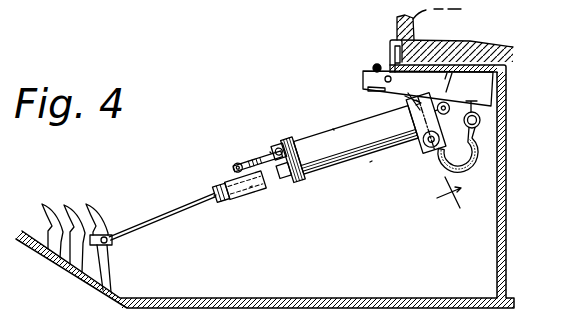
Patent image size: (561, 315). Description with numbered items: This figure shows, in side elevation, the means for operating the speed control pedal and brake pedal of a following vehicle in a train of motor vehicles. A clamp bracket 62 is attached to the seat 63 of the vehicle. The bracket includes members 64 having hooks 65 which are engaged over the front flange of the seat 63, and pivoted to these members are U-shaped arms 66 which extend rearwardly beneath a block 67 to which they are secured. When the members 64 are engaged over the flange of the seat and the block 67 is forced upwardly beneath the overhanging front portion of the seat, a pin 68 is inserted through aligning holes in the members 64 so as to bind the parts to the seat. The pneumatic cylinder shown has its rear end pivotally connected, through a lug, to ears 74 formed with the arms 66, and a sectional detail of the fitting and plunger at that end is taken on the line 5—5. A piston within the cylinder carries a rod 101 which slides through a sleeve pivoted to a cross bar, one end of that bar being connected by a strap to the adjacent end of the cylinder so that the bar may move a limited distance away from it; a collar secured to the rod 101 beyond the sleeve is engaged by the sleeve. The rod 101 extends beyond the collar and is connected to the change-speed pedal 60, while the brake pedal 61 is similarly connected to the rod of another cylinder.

The section line 5— 5 is at (426, 150).
The change-speed pedal 60 is at (103, 218).
The brake pedal 61 is at (49, 202).
The clamp bracket 62 is at (481, 59).
The seat 63 is at (447, 60).
The members 64 is at (384, 56).
The hooks 65 is at (419, 27).
The U-shaped arms 66 is at (394, 91).
The block 67 is at (464, 82).
The pin 68 is at (372, 68).
The ears 74 is at (459, 136).
The rod 101 is at (174, 214).